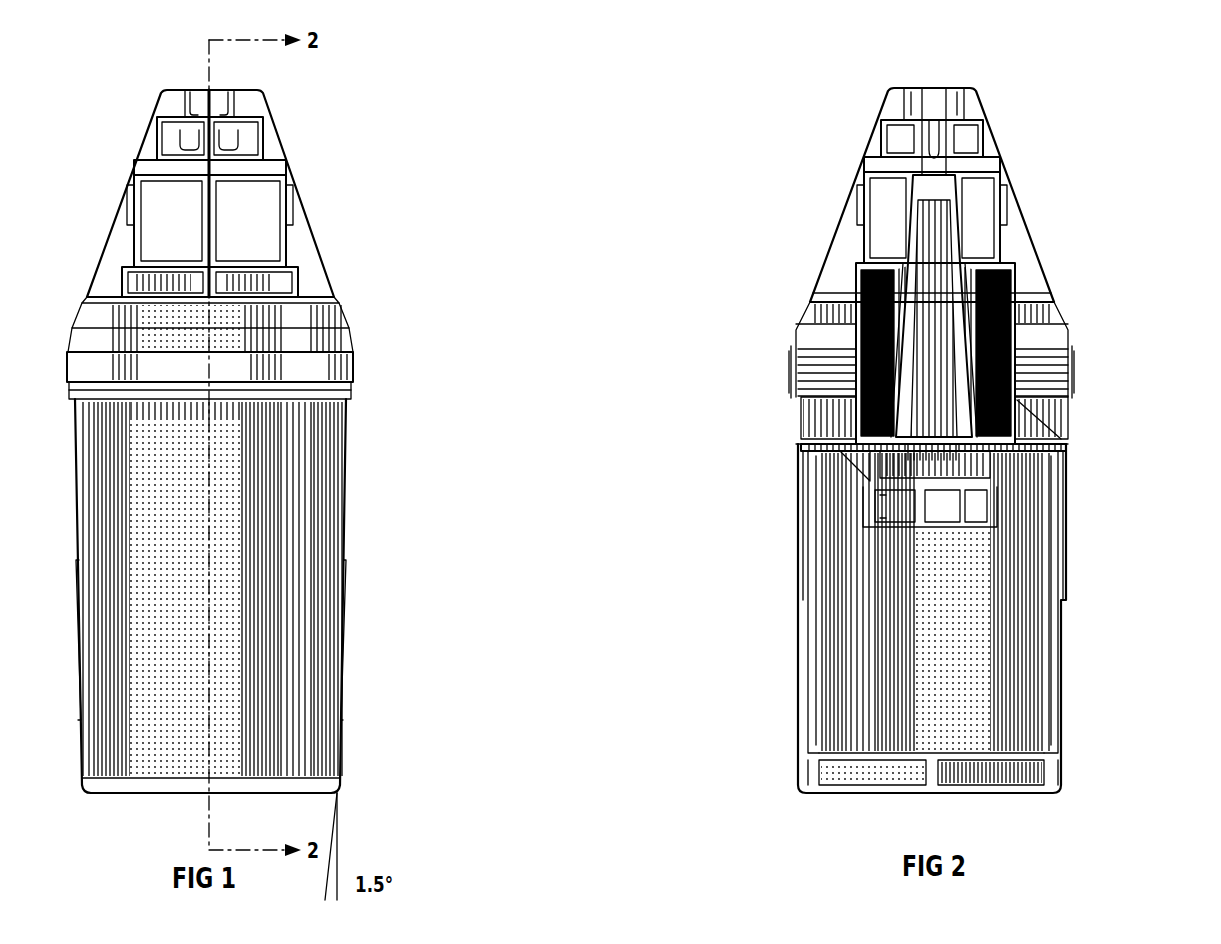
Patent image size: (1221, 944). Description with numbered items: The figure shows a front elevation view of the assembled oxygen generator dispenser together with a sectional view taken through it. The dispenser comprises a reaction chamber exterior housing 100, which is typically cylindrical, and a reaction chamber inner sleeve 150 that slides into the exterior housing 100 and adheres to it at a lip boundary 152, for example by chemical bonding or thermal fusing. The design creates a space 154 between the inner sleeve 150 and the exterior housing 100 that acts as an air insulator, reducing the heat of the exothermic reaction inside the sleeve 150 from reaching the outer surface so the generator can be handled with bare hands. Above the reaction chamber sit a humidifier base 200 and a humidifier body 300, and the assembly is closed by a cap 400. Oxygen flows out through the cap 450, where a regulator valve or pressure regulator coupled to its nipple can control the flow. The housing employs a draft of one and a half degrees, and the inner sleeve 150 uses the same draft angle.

In FIG. 1, the reaction chamber exterior housing 100 is at (291, 597).
In FIG. 2, the reaction chamber exterior housing 100 is at (790, 625).
In FIG. 2, the reaction chamber inner sleeve 150 is at (1041, 690).
In FIG. 2, the lip boundary 152 is at (1062, 444).
In FIG. 2, the space 154 is at (1052, 617).
In FIG. 2, the humidifier base 200 is at (857, 512).
In FIG. 2, the humidifier body 300 is at (871, 305).
In FIG. 1, the cap 400 is at (293, 197).
In FIG. 2, the cap 400 is at (826, 211).
In FIG. 2, the cap 450 is at (931, 188).